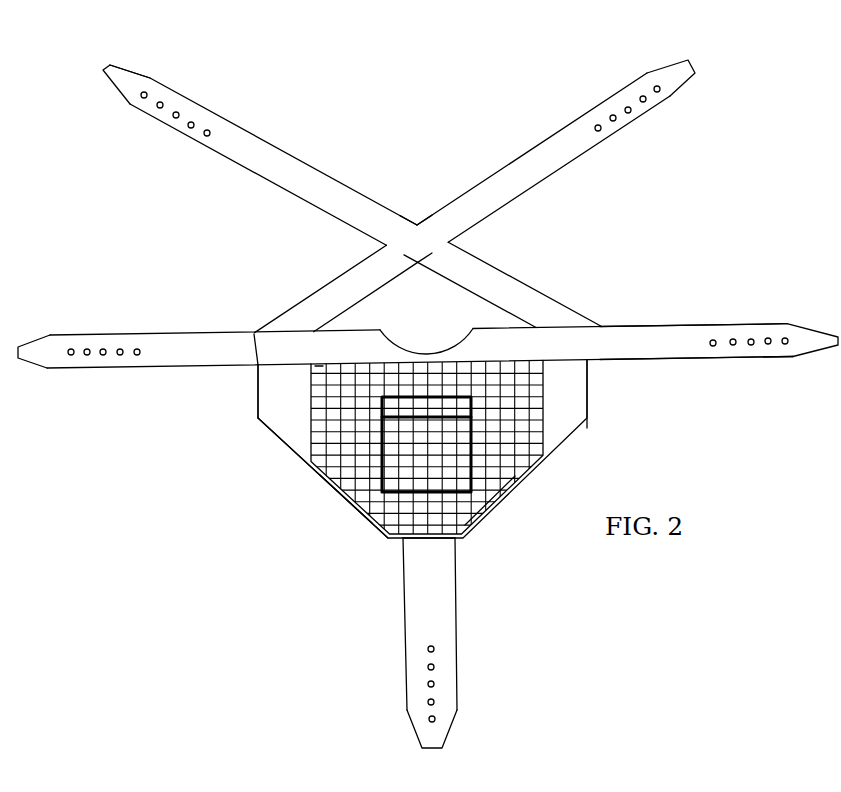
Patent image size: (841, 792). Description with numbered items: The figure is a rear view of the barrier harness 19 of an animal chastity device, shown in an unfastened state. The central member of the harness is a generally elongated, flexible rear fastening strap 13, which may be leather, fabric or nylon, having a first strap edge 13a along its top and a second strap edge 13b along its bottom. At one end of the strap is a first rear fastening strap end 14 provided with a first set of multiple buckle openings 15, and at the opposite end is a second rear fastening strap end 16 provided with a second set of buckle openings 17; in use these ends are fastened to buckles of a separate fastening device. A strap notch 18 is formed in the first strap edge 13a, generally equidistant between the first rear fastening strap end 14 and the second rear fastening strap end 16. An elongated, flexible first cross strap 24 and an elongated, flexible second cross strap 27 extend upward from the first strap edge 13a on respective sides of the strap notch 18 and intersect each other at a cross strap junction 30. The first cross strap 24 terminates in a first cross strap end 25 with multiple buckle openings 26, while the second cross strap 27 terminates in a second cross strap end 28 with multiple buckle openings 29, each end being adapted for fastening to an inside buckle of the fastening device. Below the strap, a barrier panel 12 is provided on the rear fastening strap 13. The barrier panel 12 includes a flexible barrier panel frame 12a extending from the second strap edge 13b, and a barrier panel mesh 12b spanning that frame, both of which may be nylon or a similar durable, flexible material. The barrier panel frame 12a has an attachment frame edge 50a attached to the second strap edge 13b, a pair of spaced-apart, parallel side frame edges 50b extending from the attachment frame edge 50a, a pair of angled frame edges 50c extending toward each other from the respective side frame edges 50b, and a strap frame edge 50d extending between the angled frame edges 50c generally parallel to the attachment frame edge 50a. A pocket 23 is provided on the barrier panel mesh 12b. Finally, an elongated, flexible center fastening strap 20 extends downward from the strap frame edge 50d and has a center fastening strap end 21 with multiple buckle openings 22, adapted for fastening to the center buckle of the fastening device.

The barrier panel 12 is at (285, 462).
The barrier panel frame 12a is at (297, 410).
The barrier panel mesh 12b is at (356, 486).
The rear fastening strap 13 is at (201, 360).
The first strap edge 13a is at (647, 326).
The second strap edge 13b is at (677, 364).
The first rear fastening strap end 14 is at (48, 356).
The first set of multiple buckle openings 15 is at (121, 355).
The second rear fastening strap end 16 is at (821, 347).
The second set of buckle openings 17 is at (752, 348).
The strap notch 18 is at (436, 355).
The barrier harness 19 is at (279, 72).
The center fastening strap 20 is at (443, 598).
The center fastening strap end 21 is at (435, 733).
The multiple buckle openings 22 is at (434, 667).
The pocket 23 is at (473, 457).
The first cross strap 24 is at (490, 187).
The first cross strap end 25 is at (681, 74).
The multiple buckle openings 26 is at (643, 101).
The second cross strap 27 is at (318, 183).
The second cross strap end 28 is at (121, 79).
The multiple buckle openings 29 is at (191, 127).
The cross strap junction 30 is at (419, 242).
The attachment frame edge 50a is at (319, 365).
The side frame edges 50b is at (258, 383).
The angled frame edges 50c is at (370, 480).
The strap frame edge 50d is at (418, 540).